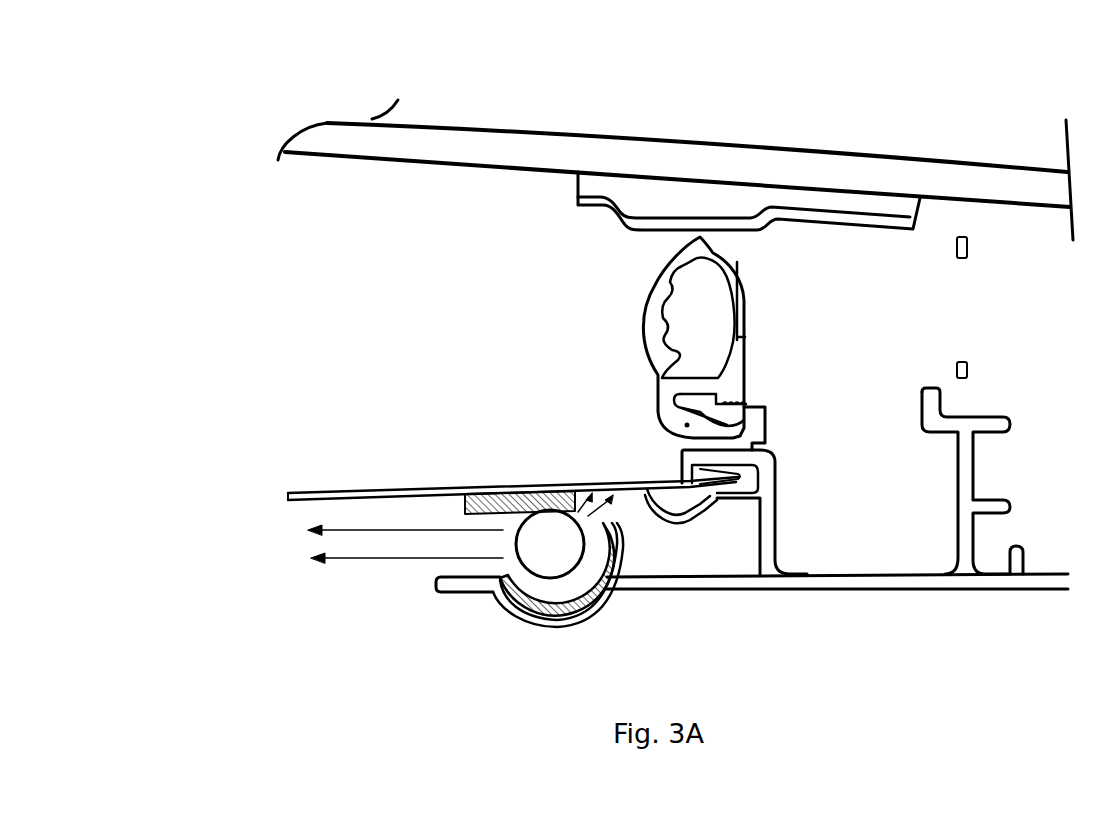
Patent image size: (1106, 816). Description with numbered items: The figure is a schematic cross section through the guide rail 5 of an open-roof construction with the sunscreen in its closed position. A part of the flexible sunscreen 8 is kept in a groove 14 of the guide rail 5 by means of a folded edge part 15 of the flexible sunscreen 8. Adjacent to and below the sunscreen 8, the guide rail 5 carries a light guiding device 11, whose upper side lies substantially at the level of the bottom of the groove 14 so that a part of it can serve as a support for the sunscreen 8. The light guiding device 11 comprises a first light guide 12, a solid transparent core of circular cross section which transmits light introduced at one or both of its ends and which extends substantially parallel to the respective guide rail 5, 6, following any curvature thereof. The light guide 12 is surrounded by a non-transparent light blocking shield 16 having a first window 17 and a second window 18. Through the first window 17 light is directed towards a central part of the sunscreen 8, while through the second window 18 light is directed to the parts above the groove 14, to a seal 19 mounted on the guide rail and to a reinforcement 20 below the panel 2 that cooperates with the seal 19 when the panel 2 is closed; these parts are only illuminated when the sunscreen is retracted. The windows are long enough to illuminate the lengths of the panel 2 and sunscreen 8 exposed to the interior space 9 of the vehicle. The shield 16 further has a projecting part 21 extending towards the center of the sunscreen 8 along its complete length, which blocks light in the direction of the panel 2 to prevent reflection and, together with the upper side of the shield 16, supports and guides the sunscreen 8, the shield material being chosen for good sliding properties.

The panel 2 is at (752, 163).
The guide rail 5 is at (843, 594).
The guide rail 6 is at (940, 477).
The flexible sunscreen 8 is at (307, 500).
The interior space 9 is at (90, 637).
The light guiding device 11 is at (627, 559).
The first light guide 12 is at (553, 580).
The groove 14 is at (750, 477).
The folded edge part 15 is at (715, 470).
The light blocking shield 16 is at (527, 580).
The first window 17 is at (470, 513).
The second window 18 is at (607, 583).
The seal 19 is at (680, 260).
The reinforcement 20 is at (848, 218).
The projecting part 21 is at (510, 562).